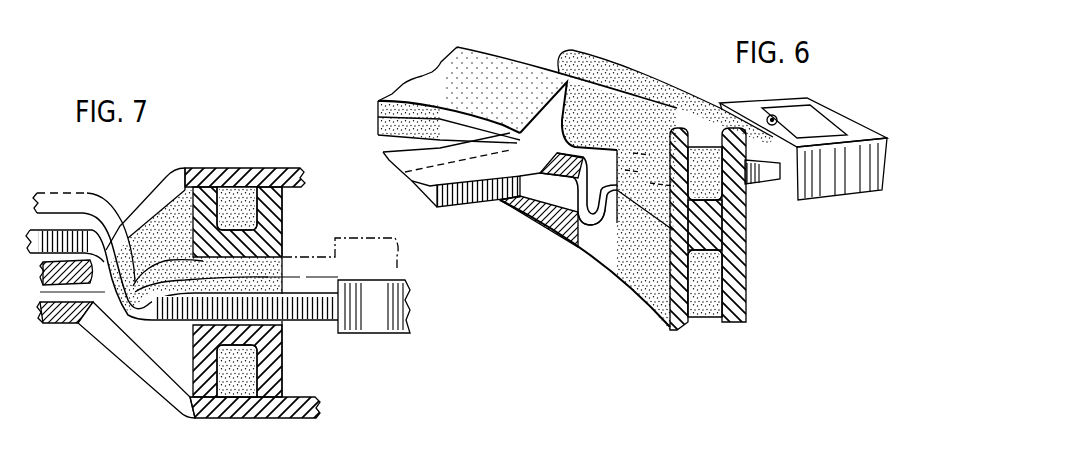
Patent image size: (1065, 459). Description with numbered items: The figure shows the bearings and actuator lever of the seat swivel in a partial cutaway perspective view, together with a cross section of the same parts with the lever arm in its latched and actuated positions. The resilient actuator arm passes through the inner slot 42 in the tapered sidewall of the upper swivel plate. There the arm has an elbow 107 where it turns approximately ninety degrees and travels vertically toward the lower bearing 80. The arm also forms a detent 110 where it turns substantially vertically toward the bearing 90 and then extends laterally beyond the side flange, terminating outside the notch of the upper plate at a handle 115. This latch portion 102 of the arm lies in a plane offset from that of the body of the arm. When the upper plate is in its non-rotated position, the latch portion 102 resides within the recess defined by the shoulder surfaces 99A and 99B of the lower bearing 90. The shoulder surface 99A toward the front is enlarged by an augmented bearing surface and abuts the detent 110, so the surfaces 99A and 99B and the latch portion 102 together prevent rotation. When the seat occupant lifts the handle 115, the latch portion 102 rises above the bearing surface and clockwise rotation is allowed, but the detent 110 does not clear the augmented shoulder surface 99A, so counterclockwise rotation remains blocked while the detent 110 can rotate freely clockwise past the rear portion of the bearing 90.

In FIG. 7, the slot 42 is at (161, 192).
In FIG. 7, the lower bearing 80 is at (284, 218).
In FIG. 7, the lower bearing 90 is at (284, 363).
In FIG. 6, the shoulder surface 99A is at (507, 200).
In FIG. 6, the shoulder surface 99B is at (607, 228).
In FIG. 7, the latch portion 102 is at (325, 313).
In FIG. 6, the latch portion 102 is at (757, 178).
In FIG. 7, the elbow 107 is at (116, 207).
In FIG. 6, the elbow 107 is at (556, 225).
In FIG. 7, the detent 110 is at (133, 332).
In FIG. 6, the detent 110 is at (590, 220).
In FIG. 7, the handle 115 is at (393, 336).
In FIG. 6, the handle 115 is at (857, 192).